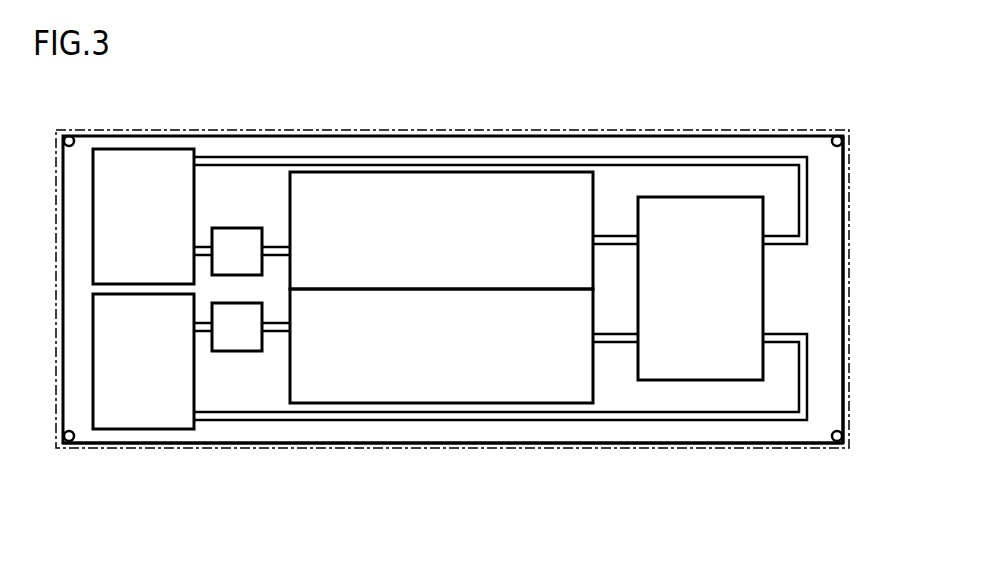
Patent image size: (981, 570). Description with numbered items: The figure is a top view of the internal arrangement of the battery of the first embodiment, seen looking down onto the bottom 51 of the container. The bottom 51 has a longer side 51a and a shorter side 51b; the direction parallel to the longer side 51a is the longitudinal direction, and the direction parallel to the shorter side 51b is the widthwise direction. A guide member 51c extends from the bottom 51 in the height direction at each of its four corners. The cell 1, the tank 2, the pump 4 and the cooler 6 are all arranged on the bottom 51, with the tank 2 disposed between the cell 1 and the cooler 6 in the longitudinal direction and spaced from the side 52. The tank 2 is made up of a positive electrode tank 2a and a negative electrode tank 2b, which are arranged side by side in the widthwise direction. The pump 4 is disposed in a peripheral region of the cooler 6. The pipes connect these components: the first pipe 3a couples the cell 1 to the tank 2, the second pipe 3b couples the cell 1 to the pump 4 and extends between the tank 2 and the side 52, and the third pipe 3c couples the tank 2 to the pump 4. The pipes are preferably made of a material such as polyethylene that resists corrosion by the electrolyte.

The cell 1 is at (745, 287).
The tank 2 is at (441, 355).
The positive electrode tank 2a is at (410, 270).
The negative electrode tank 2b is at (475, 380).
The first pipe 3a is at (618, 238).
The second pipe 3b is at (570, 158).
The third pipe 3c is at (277, 250).
The pump 4 is at (237, 238).
The cooler 6 is at (143, 168).
The bottom 51 is at (478, 136).
The longer side 51a is at (783, 443).
The shorter side 51b is at (843, 375).
The guide member 51c is at (69, 136).
The side 52 is at (410, 130).